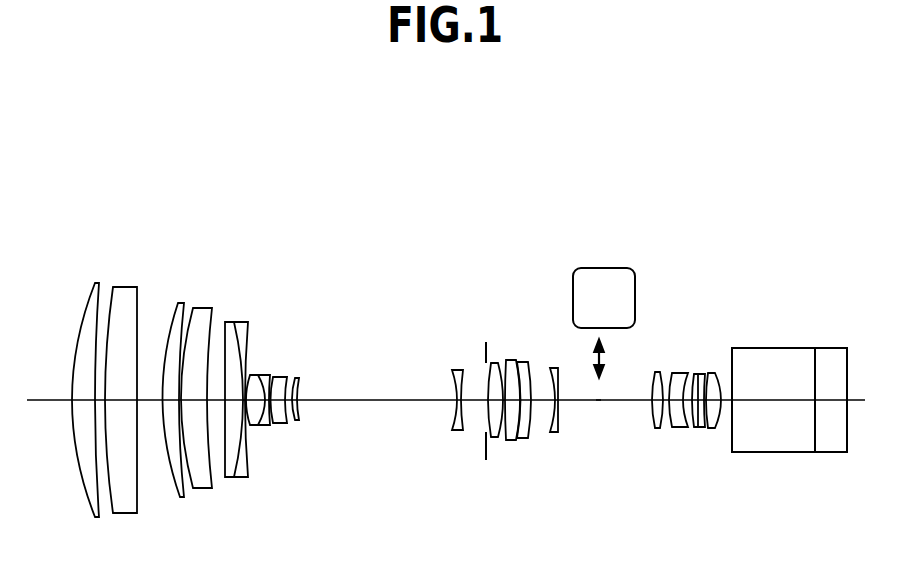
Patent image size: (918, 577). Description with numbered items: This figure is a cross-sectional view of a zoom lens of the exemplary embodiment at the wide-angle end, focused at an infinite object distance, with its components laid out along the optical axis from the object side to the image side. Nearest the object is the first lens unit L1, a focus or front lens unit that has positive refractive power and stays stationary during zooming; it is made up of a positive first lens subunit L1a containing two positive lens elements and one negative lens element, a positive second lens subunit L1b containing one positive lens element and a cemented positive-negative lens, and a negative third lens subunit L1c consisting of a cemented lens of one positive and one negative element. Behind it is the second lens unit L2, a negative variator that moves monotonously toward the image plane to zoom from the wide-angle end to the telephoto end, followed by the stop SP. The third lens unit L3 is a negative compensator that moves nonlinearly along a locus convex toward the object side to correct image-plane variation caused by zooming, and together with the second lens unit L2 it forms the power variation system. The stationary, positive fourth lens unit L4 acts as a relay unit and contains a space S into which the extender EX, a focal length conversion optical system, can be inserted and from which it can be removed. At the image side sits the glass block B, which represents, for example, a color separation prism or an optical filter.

The first lens unit L1 is at (268, 180).
The first lens subunit L1a is at (65, 265).
The second lens subunit L1b is at (158, 273).
The third lens subunit L1c is at (218, 297).
The second lens unit L2 is at (305, 430).
The third lens unit L3 is at (453, 434).
The fourth lens unit L4 is at (515, 502).
The stop SP is at (486, 341).
The extender EX is at (604, 303).
The space S is at (598, 412).
The glass block B is at (718, 322).